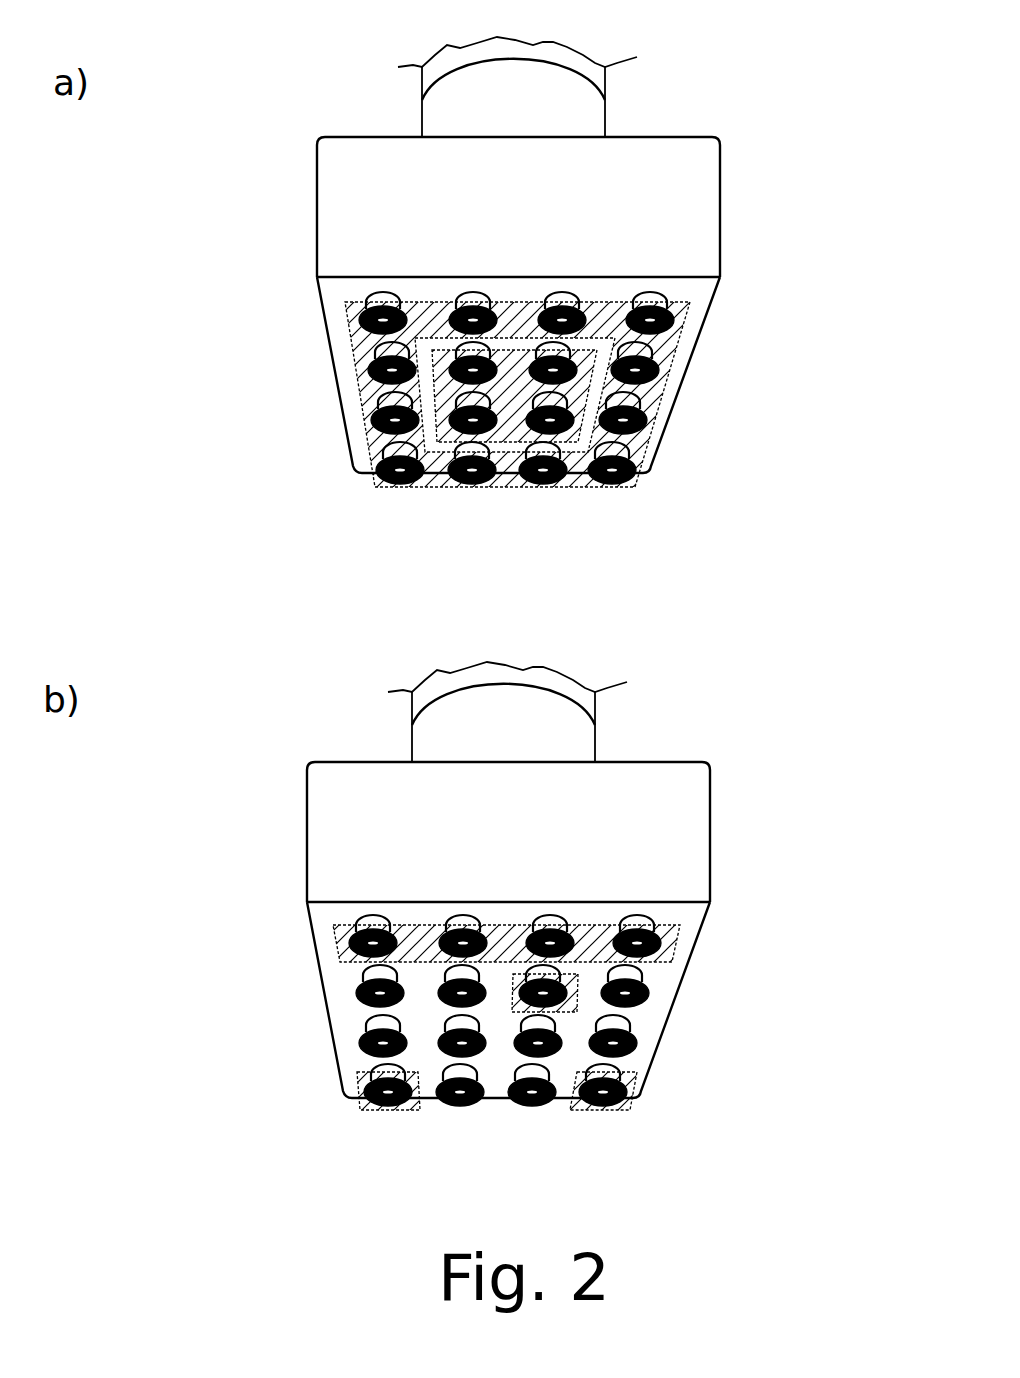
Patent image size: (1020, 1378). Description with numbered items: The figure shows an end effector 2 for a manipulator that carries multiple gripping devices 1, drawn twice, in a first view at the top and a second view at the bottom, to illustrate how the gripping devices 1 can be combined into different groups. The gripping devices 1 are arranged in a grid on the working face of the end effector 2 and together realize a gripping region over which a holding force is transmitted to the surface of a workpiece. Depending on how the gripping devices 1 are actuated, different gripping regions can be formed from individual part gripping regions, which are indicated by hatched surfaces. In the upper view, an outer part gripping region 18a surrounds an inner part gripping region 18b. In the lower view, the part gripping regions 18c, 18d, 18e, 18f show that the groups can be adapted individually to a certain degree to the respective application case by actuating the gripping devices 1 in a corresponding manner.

The gripping device 1 is at (480, 483).
The end effector 2 is at (790, 197).
The outer part gripping region 18a is at (350, 308).
The inner part gripping region 18b is at (452, 394).
The part gripping region 18c is at (343, 928).
The part gripping region 18d is at (570, 1008).
The part gripping region 18e is at (618, 1107).
The part gripping region 18f is at (365, 1078).